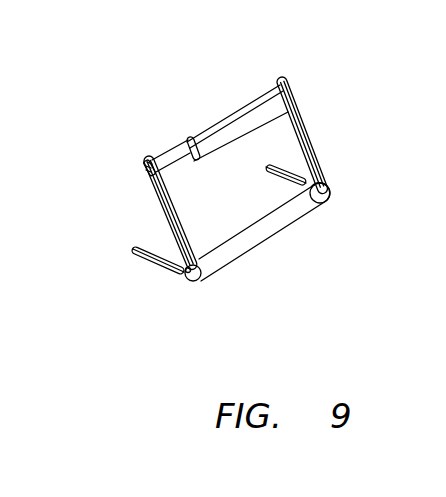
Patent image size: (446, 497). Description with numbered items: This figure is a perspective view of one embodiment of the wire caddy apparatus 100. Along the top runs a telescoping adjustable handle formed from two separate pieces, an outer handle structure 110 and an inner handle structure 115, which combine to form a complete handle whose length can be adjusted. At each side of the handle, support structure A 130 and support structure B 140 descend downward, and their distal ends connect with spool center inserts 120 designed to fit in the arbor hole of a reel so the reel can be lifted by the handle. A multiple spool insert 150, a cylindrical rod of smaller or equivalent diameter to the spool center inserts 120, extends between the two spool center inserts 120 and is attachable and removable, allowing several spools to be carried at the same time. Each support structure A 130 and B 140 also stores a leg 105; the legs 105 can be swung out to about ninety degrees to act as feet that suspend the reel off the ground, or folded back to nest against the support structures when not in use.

The wire caddy apparatus 100 is at (150, 66).
The leg 105 is at (265, 178).
The outer handle structure 110 is at (248, 103).
The inner handle structure 115 is at (163, 158).
The spool center insert 120 is at (203, 280).
The support structure A 130 is at (156, 193).
The support structure B 140 is at (313, 140).
The multiple spool insert 150 is at (262, 246).